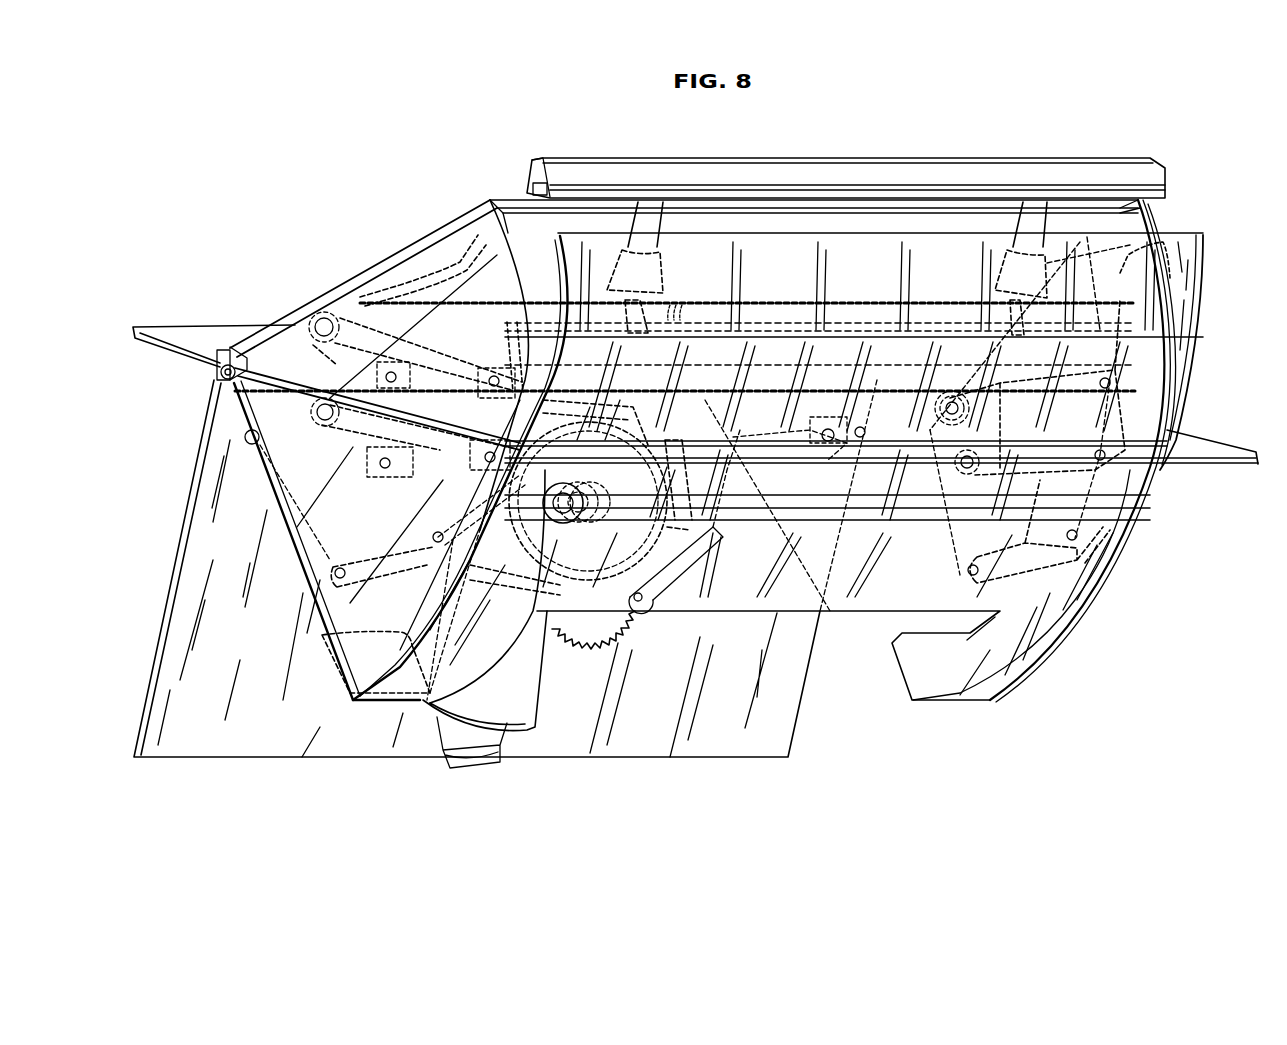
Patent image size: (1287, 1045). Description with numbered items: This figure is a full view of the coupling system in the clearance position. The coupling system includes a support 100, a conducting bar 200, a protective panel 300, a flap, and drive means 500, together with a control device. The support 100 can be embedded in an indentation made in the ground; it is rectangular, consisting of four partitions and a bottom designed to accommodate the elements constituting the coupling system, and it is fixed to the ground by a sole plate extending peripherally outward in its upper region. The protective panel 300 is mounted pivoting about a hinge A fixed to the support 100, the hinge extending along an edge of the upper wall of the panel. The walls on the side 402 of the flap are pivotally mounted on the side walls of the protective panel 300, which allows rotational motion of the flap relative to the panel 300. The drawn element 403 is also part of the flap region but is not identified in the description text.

The glass door panel 100 is at (190, 493).
The top rail 200 is at (578, 173).
The shelf 300 is at (385, 268).
The hanging bucket 402 is at (527, 265).
The curved end shelf 403 is at (1182, 338).
The motor 500 is at (532, 692).
The hinge axis A is at (232, 370).